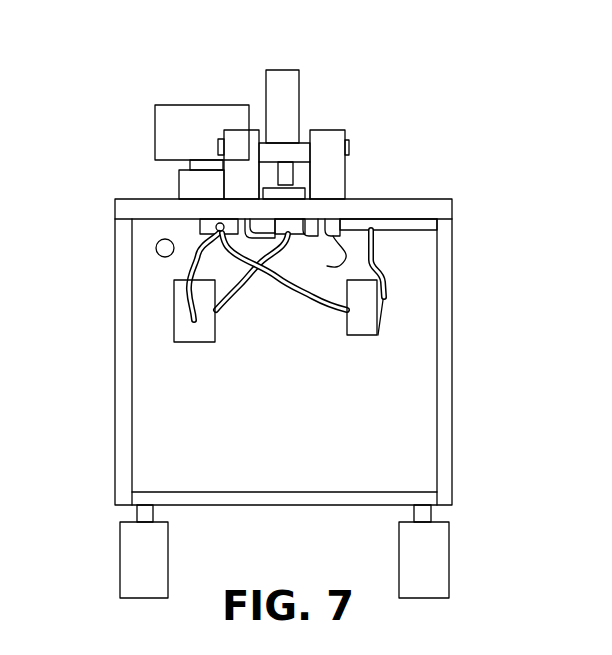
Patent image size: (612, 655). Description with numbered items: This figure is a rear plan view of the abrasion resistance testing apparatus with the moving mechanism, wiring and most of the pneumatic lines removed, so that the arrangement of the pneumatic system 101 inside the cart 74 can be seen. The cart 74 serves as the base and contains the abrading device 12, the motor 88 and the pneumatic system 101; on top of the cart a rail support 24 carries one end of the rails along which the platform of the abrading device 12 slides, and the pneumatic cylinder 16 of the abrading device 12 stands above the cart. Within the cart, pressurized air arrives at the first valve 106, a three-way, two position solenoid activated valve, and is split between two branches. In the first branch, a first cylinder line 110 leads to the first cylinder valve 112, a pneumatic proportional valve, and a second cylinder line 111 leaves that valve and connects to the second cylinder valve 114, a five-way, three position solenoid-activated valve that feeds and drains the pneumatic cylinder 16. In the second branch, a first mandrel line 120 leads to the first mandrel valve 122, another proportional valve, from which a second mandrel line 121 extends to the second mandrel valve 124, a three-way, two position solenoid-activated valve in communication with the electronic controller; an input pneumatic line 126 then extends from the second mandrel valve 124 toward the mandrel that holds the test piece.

The abrading device 12 is at (282, 82).
The pneumatic cylinder 16 is at (298, 148).
The rail support 24 is at (340, 180).
The cart 74 is at (422, 203).
The motor 88 is at (175, 136).
The pneumatic system 101 is at (172, 290).
The first valve 106 is at (200, 228).
The first cylinder line 110 is at (183, 308).
The second cylinder line 111 is at (237, 289).
The first cylinder valve 112 is at (186, 330).
The second cylinder valve 114 is at (283, 237).
The first mandrel line 120 is at (329, 312).
The second mandrel line 121 is at (384, 288).
The first mandrel valve 122 is at (378, 335).
The second mandrel valve 124 is at (362, 228).
The input pneumatic line 126 is at (317, 258).